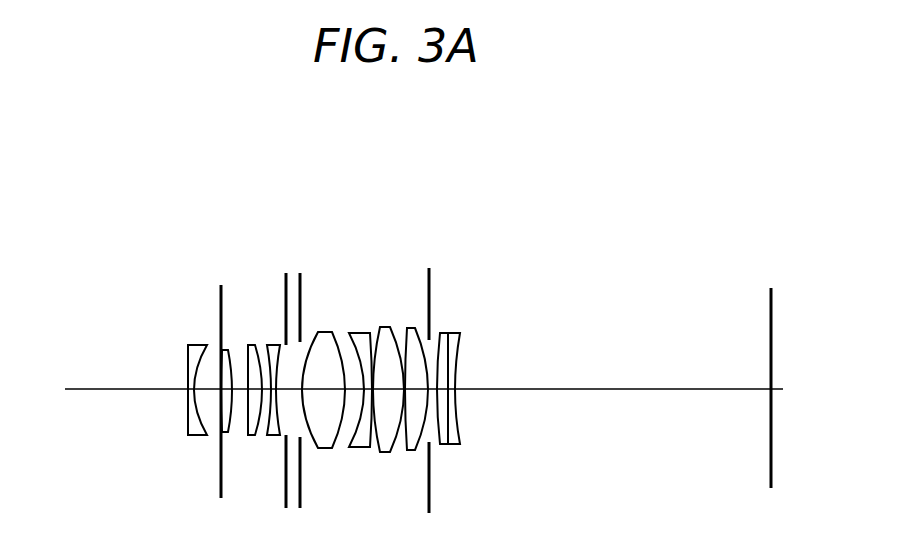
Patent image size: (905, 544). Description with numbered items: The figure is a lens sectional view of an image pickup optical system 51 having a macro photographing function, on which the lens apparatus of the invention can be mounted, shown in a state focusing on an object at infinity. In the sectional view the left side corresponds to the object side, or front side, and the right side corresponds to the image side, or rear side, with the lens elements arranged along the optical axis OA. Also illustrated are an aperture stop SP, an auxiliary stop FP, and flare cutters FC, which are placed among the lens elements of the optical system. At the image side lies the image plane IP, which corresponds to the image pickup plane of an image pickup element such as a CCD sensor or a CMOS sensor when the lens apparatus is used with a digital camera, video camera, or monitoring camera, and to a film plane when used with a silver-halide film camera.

The image pickup optical system 51 is at (153, 162).
The flare cutters FC is at (218, 285).
The auxiliary stop FP is at (281, 276).
The aperture stop SP is at (307, 273).
The optical axis OA is at (88, 384).
The image plane IP is at (767, 294).